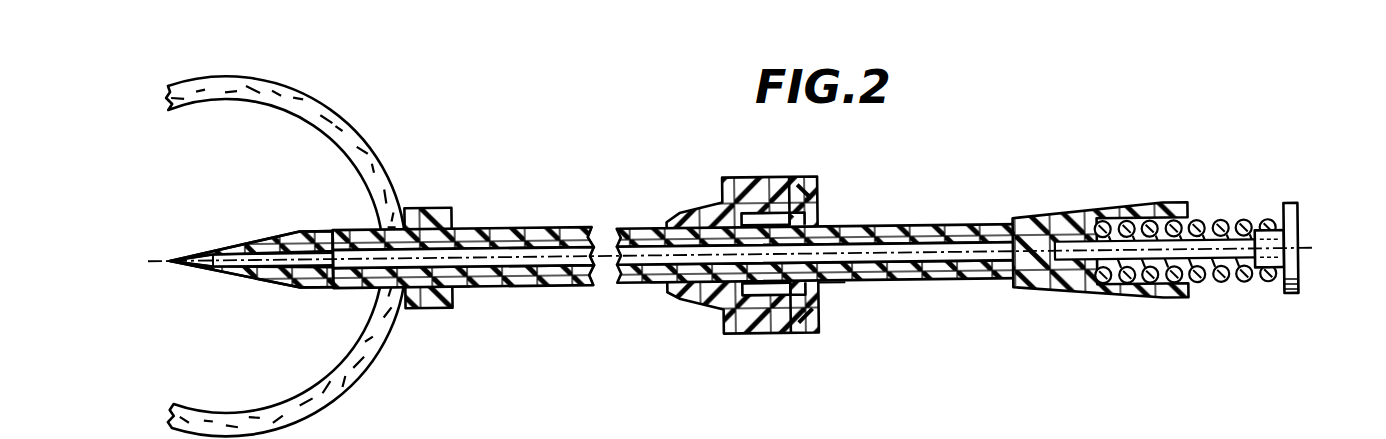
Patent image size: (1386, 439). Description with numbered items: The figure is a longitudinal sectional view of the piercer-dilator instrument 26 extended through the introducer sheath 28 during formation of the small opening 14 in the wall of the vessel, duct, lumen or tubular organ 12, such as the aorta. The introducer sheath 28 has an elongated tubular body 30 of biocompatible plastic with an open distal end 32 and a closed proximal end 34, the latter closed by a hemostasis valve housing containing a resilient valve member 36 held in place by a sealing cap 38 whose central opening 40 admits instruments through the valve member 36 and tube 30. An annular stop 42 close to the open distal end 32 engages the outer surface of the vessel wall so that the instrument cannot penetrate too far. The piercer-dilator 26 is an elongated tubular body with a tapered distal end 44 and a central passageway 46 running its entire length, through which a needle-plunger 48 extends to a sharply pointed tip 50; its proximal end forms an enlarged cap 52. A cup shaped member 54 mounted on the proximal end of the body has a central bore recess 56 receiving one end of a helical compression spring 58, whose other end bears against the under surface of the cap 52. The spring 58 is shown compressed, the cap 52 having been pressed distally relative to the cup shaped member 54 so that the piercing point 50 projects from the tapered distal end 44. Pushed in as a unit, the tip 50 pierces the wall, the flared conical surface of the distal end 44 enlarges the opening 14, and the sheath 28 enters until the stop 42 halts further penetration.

The vessel, duct, lumen or tubular organ 12 is at (328, 114).
The small opening 14 is at (392, 218).
The piercer-dilator instrument 26 is at (930, 236).
The introducer sheath 28 is at (564, 232).
The elongated tubular body 30 is at (578, 235).
The open distal end 32 is at (318, 234).
The closed proximal end 34 is at (764, 341).
The resilient valve member 36 is at (802, 341).
The sealing cap 38 is at (820, 214).
The central opening 40 is at (832, 290).
The annular stop 42 is at (449, 216).
The tapered distal end 44 is at (266, 281).
The central passageway 46 is at (455, 291).
The needle-plunger 48 is at (664, 284).
The pointed tip 50 is at (168, 262).
The cap 52 is at (1298, 250).
The cup shaped member 54 is at (1060, 224).
The central bore recess 56 is at (1132, 224).
The helical compression spring 58 is at (1242, 232).